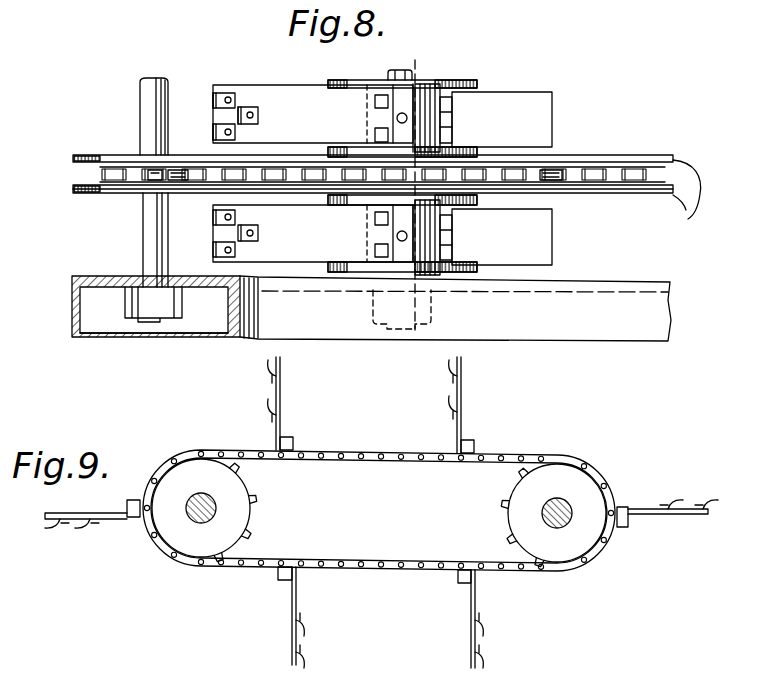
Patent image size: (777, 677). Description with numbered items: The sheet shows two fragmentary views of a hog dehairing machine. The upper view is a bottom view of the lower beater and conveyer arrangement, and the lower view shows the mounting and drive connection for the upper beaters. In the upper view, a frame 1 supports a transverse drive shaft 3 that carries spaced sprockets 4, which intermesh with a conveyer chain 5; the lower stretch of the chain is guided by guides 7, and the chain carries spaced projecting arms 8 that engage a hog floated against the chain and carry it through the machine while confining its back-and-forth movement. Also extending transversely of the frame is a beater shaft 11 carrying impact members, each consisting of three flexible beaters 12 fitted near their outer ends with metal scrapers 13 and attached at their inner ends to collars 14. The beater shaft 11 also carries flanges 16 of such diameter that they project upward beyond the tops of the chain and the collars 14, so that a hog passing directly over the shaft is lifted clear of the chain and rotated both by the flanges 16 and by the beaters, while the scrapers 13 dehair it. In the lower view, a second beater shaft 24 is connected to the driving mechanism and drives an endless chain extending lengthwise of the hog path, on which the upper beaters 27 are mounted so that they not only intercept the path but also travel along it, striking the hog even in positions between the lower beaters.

In FIG. 8, the frame 1 is at (72, 312).
In FIG. 8, the drive shaft 3 is at (145, 104).
In FIG. 8, the sprocket 4 is at (154, 181).
In FIG. 8, the conveyer chain 5 is at (597, 183).
In FIG. 8, the guide 7 is at (55, 187).
In FIG. 8, the projecting arm 8 is at (181, 181).
In FIG. 8, the beater shaft 11 is at (412, 71).
In FIG. 8, the flexible beater 12 is at (285, 92).
In FIG. 8, the metal scraper 13 is at (213, 112).
In FIG. 8, the collar 14 is at (418, 100).
In FIG. 8, the flange 16 is at (448, 82).
In FIG. 9, the beater shaft 24 is at (216, 511).
In FIG. 9, the upper beater 27 is at (280, 402).